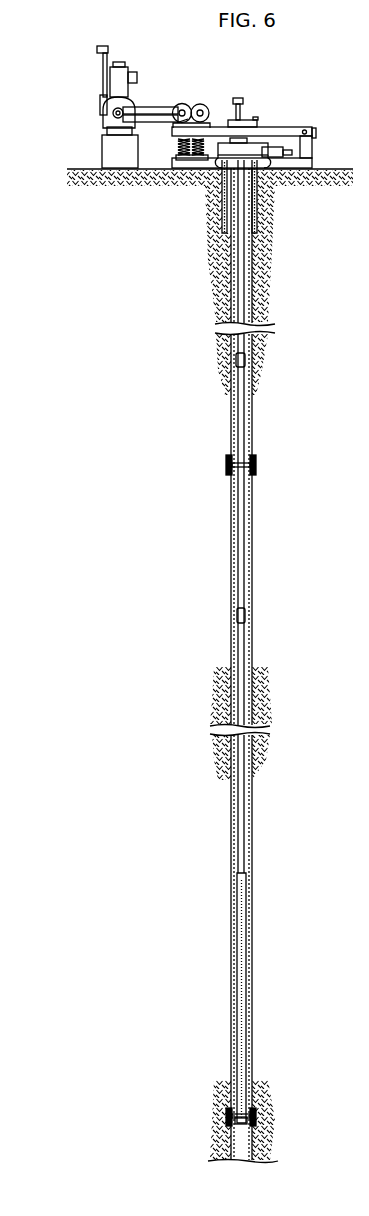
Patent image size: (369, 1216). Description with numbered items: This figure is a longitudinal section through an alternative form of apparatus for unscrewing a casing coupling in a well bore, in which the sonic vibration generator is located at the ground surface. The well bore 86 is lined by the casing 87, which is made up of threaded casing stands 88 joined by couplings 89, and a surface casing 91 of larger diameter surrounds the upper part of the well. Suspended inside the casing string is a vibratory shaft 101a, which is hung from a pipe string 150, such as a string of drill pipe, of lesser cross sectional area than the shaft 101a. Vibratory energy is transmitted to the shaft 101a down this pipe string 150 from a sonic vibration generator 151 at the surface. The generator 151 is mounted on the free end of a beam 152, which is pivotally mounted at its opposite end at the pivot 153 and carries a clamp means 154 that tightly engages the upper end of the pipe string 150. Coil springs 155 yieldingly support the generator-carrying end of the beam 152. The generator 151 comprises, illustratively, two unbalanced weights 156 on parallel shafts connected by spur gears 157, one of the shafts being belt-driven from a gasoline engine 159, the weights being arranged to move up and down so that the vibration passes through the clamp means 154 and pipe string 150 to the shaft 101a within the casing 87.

The gasoline engine 159 is at (102, 115).
The spur gears 157 is at (192, 104).
The sonic vibration generator 151 is at (204, 103).
The unbalanced weights 156 is at (178, 126).
The coil springs 155 is at (178, 147).
The clamp means 154 is at (242, 119).
The beam 152 is at (277, 127).
The pivot mounting 153 is at (311, 129).
The surface casing 91 is at (257, 217).
The well bore 86 is at (246, 275).
The casing 87 is at (228, 383).
The casing stands 88 is at (247, 492).
The couplings 89 is at (226, 465).
The pipe string 150 is at (242, 642).
The vibratory shaft 101a is at (242, 930).